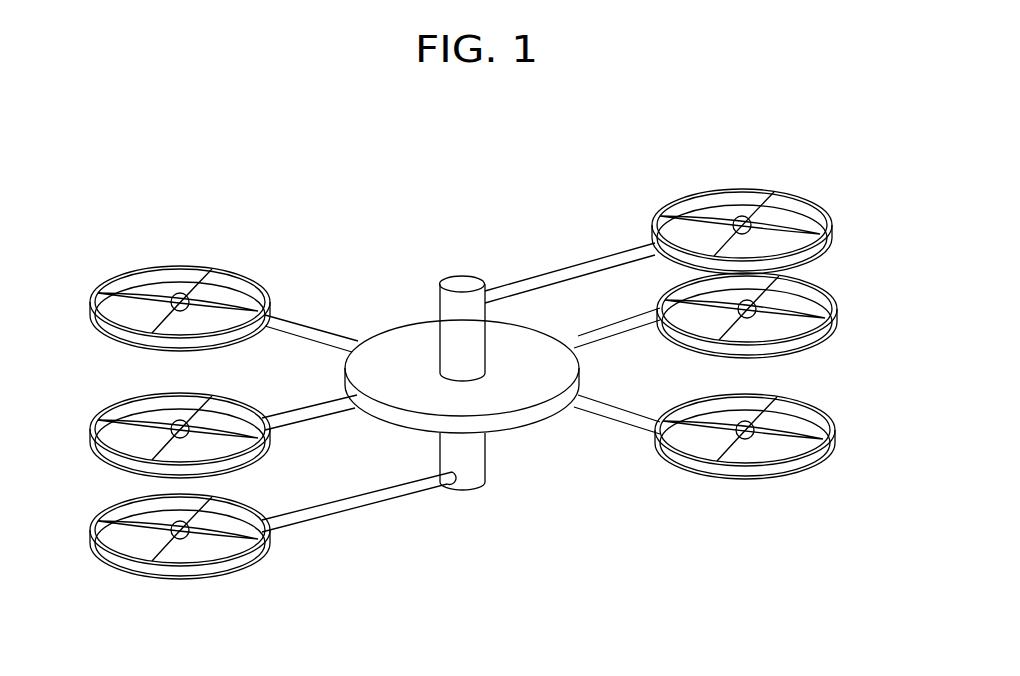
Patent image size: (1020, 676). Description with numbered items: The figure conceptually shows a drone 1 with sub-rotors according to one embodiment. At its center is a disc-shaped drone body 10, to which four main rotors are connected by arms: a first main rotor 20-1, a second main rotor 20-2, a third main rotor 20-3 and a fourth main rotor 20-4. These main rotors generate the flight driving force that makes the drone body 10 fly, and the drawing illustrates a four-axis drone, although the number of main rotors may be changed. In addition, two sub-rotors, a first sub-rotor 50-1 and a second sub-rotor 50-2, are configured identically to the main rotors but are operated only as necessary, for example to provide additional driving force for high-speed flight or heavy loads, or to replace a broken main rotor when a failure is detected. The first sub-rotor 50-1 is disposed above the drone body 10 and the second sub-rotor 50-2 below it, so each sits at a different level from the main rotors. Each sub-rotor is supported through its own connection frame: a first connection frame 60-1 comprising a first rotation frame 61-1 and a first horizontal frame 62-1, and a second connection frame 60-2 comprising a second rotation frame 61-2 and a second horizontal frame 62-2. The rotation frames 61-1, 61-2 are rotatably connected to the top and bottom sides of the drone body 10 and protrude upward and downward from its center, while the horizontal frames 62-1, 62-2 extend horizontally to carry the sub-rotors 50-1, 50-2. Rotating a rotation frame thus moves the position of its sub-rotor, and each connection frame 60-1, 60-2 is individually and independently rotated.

The drone 1 is at (305, 176).
The drone body 10 is at (515, 425).
The first main rotor 20-1 is at (818, 336).
The second main rotor 20-2 is at (735, 479).
The third main rotor 20-3 is at (103, 418).
The fourth main rotor 20-4 is at (237, 270).
The first sub-rotor 50-1 is at (690, 192).
The second sub-rotor 50-2 is at (250, 573).
The first connection frame 60-1 is at (530, 253).
The first rotation frame 61-1 is at (458, 285).
The first horizontal frame 62-1 is at (539, 278).
The second connection frame 60-2 is at (402, 537).
The second rotation frame 61-2 is at (475, 496).
The second horizontal frame 62-2 is at (359, 529).